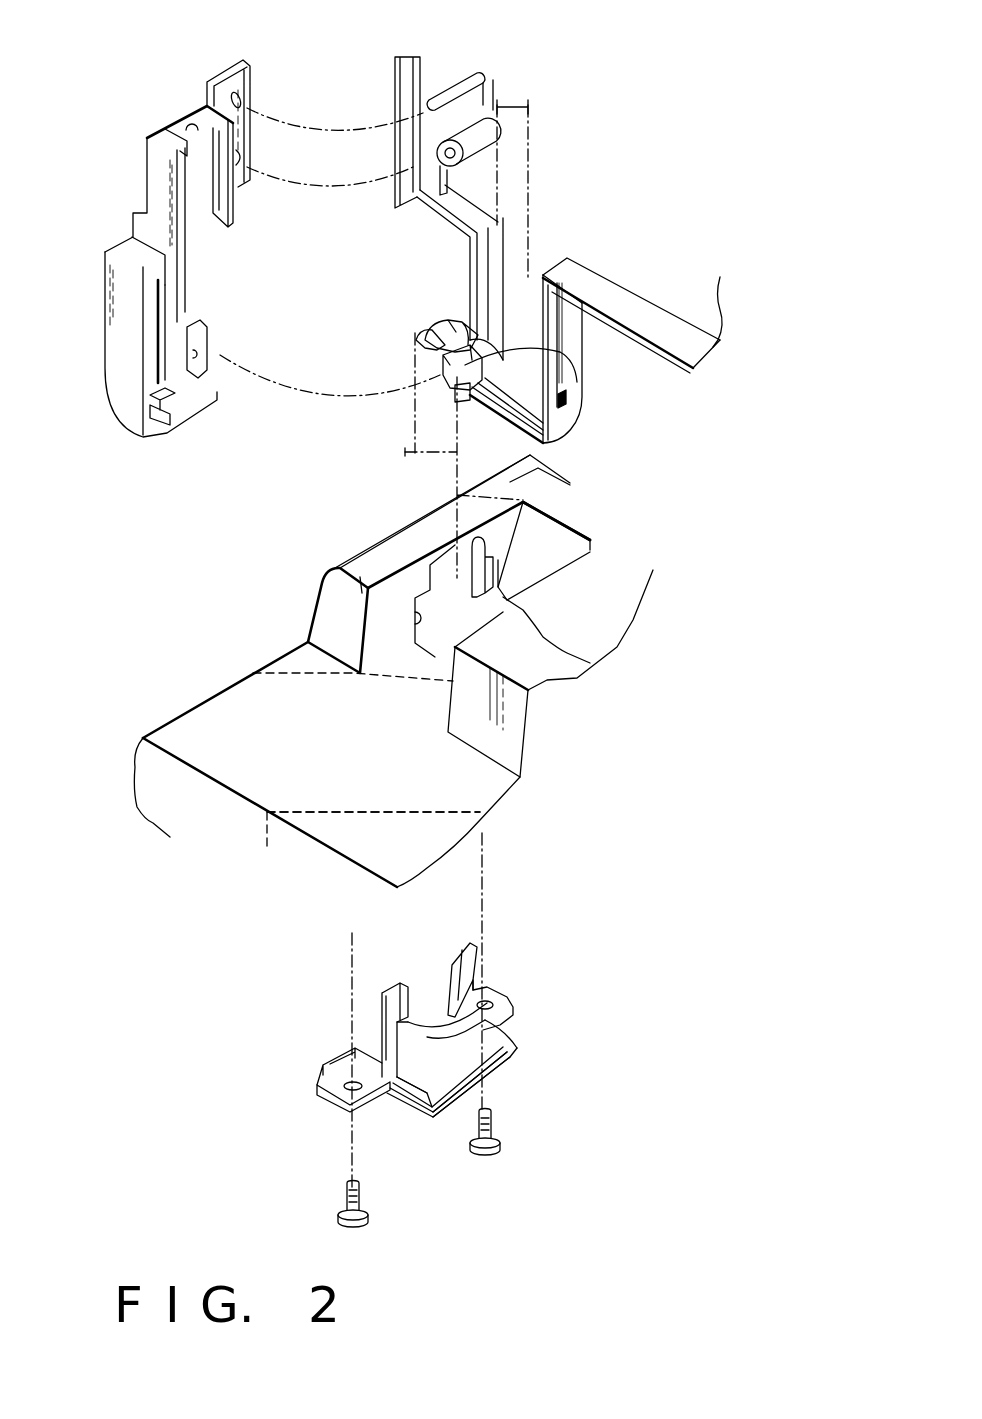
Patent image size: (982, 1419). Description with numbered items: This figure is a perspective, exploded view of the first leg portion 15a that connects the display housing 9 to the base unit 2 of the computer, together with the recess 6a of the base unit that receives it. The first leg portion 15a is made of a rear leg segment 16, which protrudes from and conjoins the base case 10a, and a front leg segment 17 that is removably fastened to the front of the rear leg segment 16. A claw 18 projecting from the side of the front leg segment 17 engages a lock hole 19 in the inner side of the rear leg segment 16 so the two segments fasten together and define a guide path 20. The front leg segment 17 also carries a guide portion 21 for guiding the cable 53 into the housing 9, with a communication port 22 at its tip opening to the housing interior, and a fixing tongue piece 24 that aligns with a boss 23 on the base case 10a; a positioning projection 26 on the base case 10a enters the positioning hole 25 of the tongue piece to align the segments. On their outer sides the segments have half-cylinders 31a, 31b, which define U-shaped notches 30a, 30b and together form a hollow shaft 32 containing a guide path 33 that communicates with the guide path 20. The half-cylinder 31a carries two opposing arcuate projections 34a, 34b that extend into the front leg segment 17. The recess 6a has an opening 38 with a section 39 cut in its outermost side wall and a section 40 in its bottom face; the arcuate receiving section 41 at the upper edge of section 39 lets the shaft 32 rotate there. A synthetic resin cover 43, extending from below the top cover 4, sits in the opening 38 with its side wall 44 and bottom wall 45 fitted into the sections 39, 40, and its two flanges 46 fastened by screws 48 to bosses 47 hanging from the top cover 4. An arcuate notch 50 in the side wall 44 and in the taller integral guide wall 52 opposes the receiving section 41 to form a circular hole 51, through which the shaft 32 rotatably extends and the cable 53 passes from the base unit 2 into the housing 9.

The base unit 2 is at (170, 708).
The top cover 4 is at (333, 828).
The recess 6a is at (377, 613).
The housing 9 is at (428, 58).
The base case 10a is at (722, 313).
The first leg portion 15a is at (463, 283).
The rear leg segment 16 is at (577, 382).
The front leg segment 17 is at (112, 308).
The claw 18 is at (143, 402).
The lock hole 19 is at (567, 403).
The guide path 20 is at (575, 305).
The guide portion 21 is at (153, 173).
The communication port 22 is at (192, 130).
The boss 23 is at (483, 138).
The fixing tongue piece 24 is at (248, 82).
The positioning hole 25 is at (212, 82).
The positioning projection 26 is at (463, 77).
The U-shaped notch 30a is at (563, 340).
The U-shaped notch 30b is at (183, 353).
The half-cylinder 31a is at (447, 377).
The half-cylinder 31b is at (190, 343).
The hollow shaft 32 is at (462, 320).
The guide path 33 is at (476, 404).
The arcuate projection 34a is at (440, 343).
The arcuate projection 34b is at (448, 455).
The opening 38 is at (463, 607).
The section 39 is at (432, 597).
The section 40 is at (557, 663).
The receiving section 41 is at (493, 562).
The cover 43 is at (331, 1115).
The side wall 44 is at (387, 1095).
The bottom wall 45 is at (490, 1087).
The flange 46 is at (330, 1090).
The boss 47 is at (507, 600).
The screw 48 is at (340, 1210).
The arcuate notch 50 is at (512, 1062).
The circular hole 51 is at (443, 563).
The guide wall 52 is at (397, 990).
The cable 53 is at (530, 193).